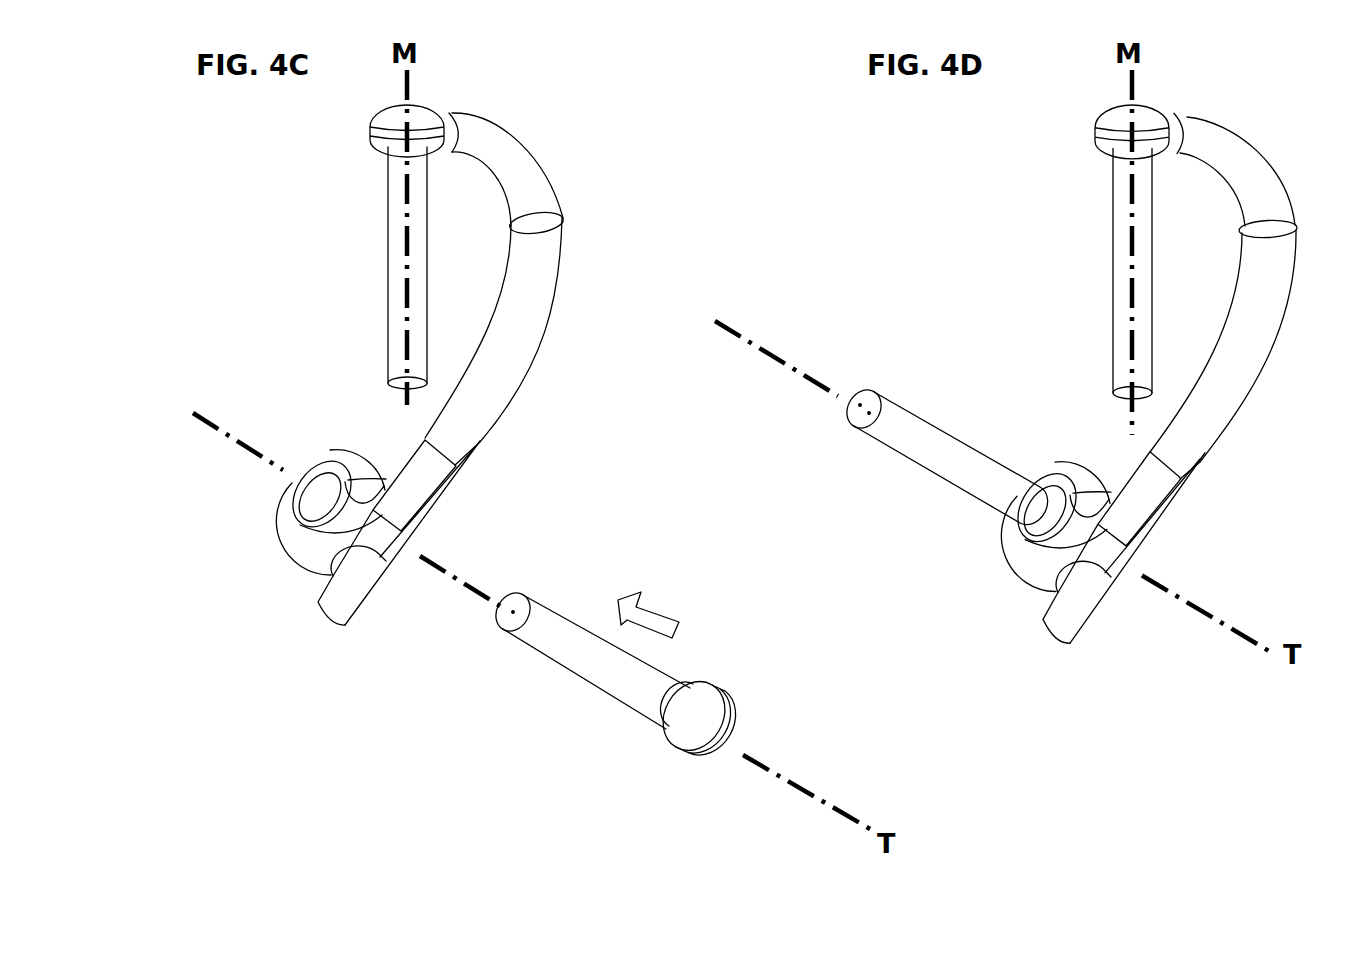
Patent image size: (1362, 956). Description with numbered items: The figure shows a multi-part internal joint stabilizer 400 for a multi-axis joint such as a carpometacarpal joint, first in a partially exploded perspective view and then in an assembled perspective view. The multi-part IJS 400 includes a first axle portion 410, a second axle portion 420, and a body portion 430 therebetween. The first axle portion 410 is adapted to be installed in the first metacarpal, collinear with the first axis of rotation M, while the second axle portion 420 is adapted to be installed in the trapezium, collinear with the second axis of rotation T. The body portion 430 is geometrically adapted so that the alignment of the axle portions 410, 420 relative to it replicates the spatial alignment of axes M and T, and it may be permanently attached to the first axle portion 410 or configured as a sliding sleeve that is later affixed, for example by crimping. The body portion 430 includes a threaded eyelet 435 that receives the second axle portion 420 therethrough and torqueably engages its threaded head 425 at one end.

In FIG. 4C, the multi-part internal joint stabilizer 400 is at (913, 250).
In FIG. 4D, the multi-part internal joint stabilizer 400 is at (1059, 374).
In FIG. 4C, the first axle portion 410 is at (400, 297).
In FIG. 4D, the first axle portion 410 is at (1125, 275).
In FIG. 4C, the second axle portion 420 is at (615, 673).
In FIG. 4D, the second axle portion 420 is at (936, 465).
In FIG. 4C, the threaded head 425 is at (680, 747).
In FIG. 4C, the body portion 430 is at (517, 338).
In FIG. 4D, the body portion 430 is at (1208, 438).
In FIG. 4C, the threaded eyelet 435 is at (333, 532).
In FIG. 4D, the threaded eyelet 435 is at (1055, 542).